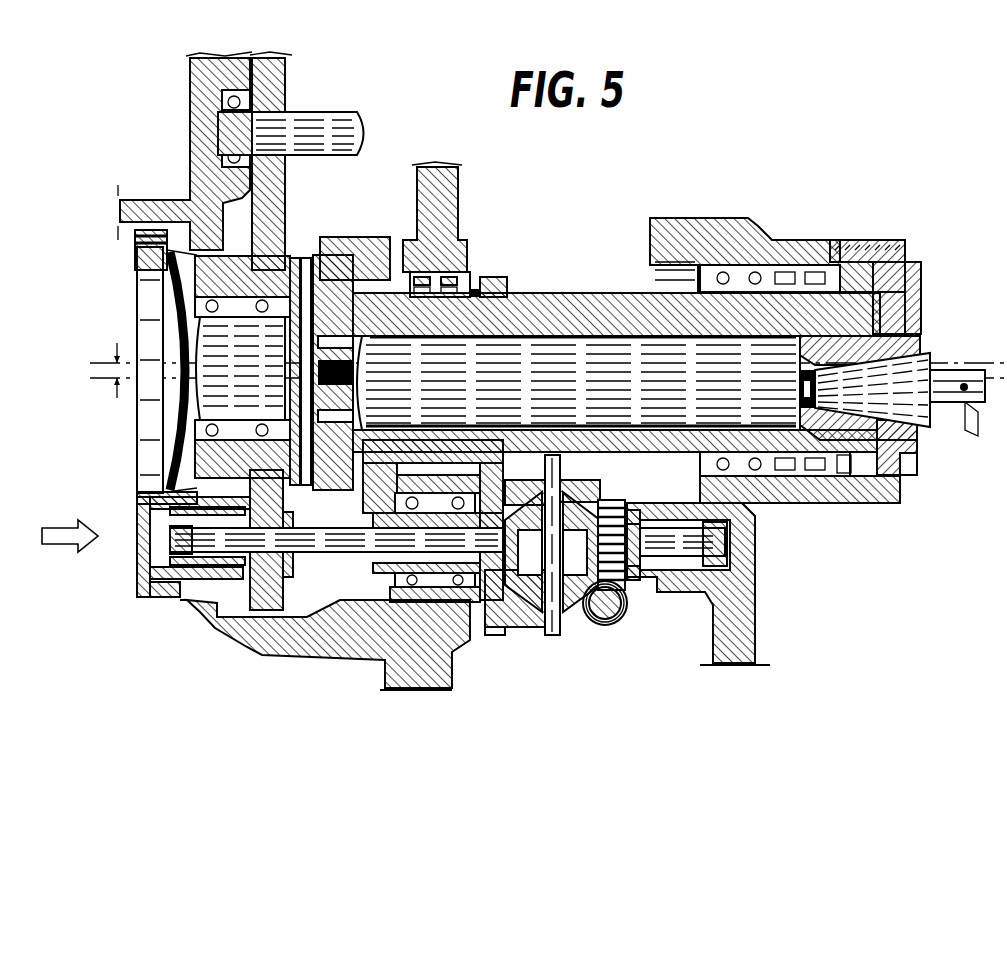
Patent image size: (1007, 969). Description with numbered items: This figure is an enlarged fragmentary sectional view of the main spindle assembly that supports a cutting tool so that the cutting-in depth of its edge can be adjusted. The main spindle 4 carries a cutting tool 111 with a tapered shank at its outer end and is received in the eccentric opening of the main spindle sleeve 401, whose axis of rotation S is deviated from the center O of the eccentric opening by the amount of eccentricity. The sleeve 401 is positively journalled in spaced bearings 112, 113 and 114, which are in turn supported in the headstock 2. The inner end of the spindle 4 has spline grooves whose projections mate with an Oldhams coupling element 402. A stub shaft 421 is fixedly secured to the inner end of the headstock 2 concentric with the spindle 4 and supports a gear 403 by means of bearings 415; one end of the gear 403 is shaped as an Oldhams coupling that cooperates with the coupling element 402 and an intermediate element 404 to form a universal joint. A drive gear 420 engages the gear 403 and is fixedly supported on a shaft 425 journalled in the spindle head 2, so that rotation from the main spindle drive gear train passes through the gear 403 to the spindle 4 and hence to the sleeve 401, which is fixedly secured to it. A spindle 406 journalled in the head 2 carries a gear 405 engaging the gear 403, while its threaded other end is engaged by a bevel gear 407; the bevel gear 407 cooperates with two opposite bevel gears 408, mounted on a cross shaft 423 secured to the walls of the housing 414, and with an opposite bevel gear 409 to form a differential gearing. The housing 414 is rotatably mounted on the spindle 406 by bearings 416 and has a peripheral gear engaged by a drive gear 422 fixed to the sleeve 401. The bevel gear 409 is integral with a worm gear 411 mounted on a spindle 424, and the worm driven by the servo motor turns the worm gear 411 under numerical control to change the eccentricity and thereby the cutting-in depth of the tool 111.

The headstock 2 is at (778, 243).
The main spindle 4 is at (903, 336).
The cutting tool 111 is at (955, 400).
The bearing 112 is at (840, 245).
The bearing 113 is at (737, 266).
The bearing 114 is at (462, 282).
The main spindle sleeve 401 is at (907, 262).
The Oldhams coupling element 402 is at (403, 245).
The gear 403 is at (297, 248).
The intermediate element 404 is at (310, 270).
The gear 405 is at (135, 490).
The spindle 406 is at (321, 556).
The bevel gear 407 is at (458, 607).
The bevel gears 408 is at (572, 507).
The bevel gear 409 is at (615, 505).
The worm gear 411 is at (617, 595).
The housing of the differential gearing 414 is at (517, 628).
The bearings 415 is at (172, 284).
The bearings 416 is at (497, 632).
The drive gear 420 is at (287, 193).
The stub shaft 421 is at (147, 422).
The drive gear 422 is at (503, 280).
The cross shaft 423 is at (553, 620).
The spindle 424 is at (740, 540).
The shaft 425 is at (332, 118).
The axis of rotation of the main spindle sleeve S is at (113, 360).
The axis of the main spindle O is at (102, 380).